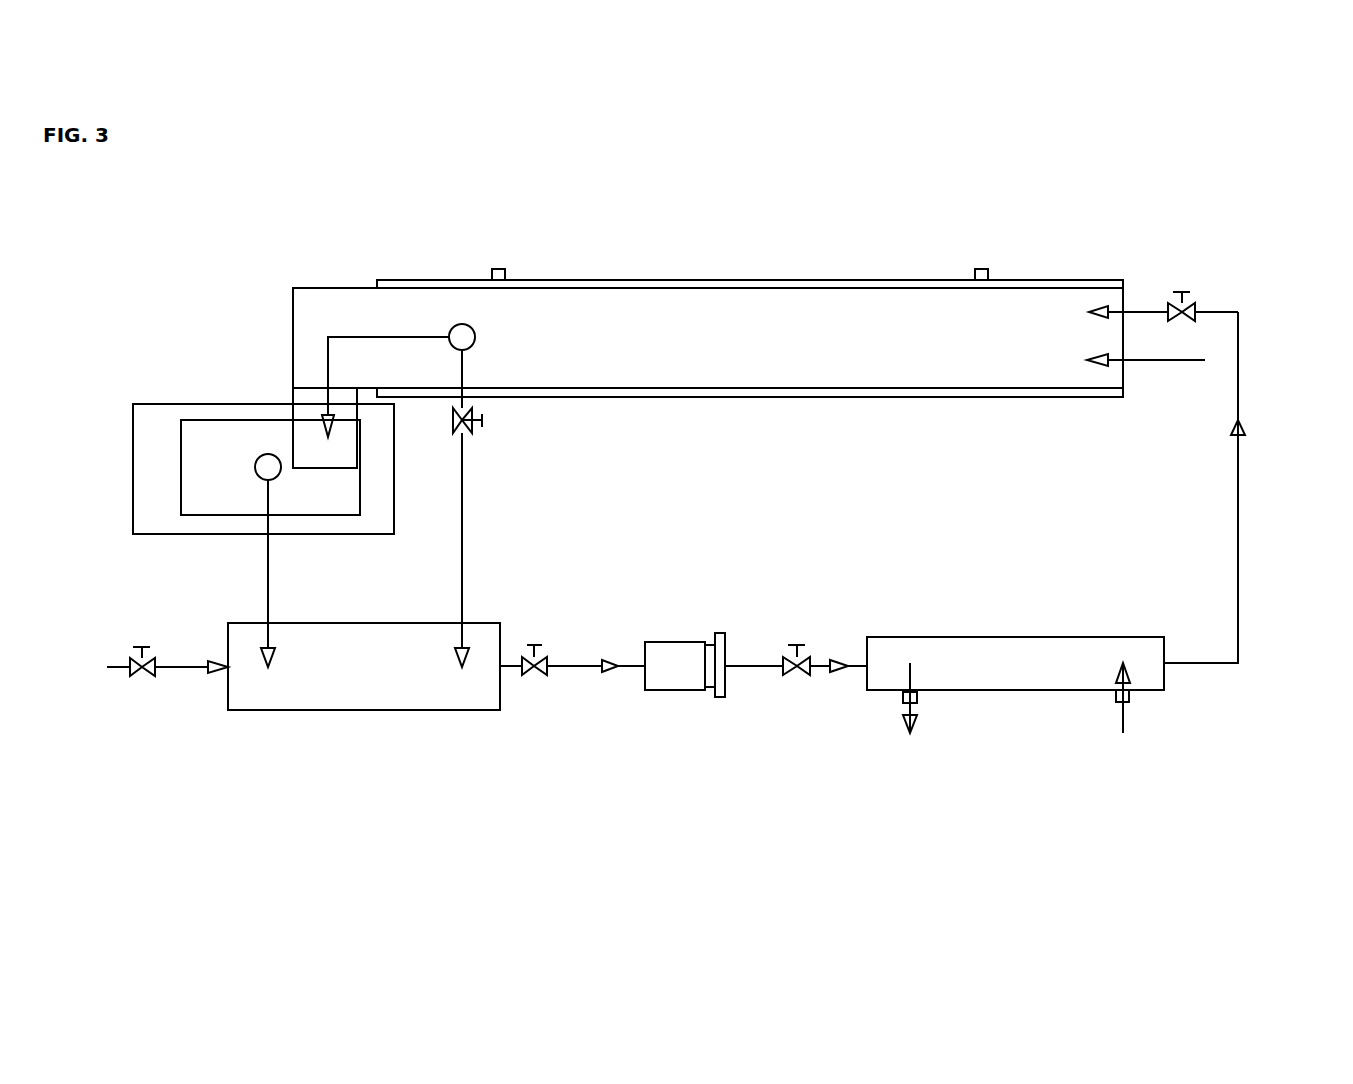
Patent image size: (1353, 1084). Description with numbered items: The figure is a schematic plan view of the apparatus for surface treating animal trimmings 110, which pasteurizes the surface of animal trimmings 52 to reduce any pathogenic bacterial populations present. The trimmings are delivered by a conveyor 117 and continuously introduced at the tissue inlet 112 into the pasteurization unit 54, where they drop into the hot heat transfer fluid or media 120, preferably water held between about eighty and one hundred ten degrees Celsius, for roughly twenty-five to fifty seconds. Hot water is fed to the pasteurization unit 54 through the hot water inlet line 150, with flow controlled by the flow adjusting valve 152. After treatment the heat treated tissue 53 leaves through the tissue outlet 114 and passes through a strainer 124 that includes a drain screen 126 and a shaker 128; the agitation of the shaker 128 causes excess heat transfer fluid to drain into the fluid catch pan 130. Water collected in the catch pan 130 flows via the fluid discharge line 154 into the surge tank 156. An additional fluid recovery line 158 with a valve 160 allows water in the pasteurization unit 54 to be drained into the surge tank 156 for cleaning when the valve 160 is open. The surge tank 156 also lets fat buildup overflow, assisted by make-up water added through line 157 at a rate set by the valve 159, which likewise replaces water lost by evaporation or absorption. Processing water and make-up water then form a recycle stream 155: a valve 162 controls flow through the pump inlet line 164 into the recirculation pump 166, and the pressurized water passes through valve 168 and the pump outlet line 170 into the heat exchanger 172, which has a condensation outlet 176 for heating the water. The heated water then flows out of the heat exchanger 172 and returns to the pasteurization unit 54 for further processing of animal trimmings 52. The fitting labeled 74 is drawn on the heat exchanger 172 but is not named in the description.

The apparatus for surface treating animal trimmings 110 is at (1300, 268).
The hot heat transfer fluid or media 120 is at (810, 318).
The pasteurization unit 54 is at (642, 280).
The heat treated tissue 53 is at (323, 407).
The shaker 128 is at (163, 403).
The strainer 124 is at (180, 442).
The drain screen 126 is at (320, 515).
The fluid catch pan 130 is at (262, 480).
The tissue outlet 114 is at (328, 375).
The valve 160 is at (467, 427).
The additional fluid recovery line 158 is at (463, 520).
The fluid discharge line 154 is at (270, 583).
The valve 159 is at (133, 675).
The line 157 is at (186, 668).
The surge tank 156 is at (387, 712).
The valve 162 is at (528, 675).
The pump inlet line 164 is at (572, 663).
The recirculation pump 166 is at (683, 690).
The valve 168 is at (800, 673).
The pump outlet line 170 is at (820, 662).
The heat exchanger 172 is at (978, 635).
The condensation outlet 176 is at (917, 705).
The inlet fitting 74 is at (1123, 715).
The recycle stream 155 is at (1245, 700).
The hot water inlet line 150 is at (1238, 366).
The flow adjusting valve 152 is at (1188, 300).
The animal trimmings 52 is at (1160, 358).
The tissue inlet 112 is at (1128, 362).
The conveyor 117 is at (1182, 362).